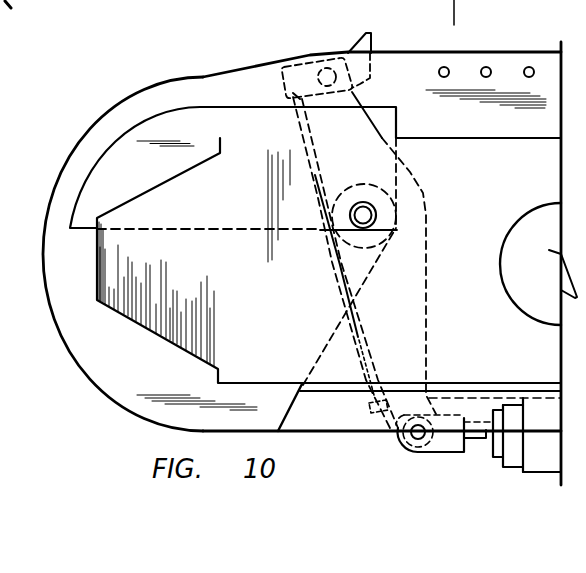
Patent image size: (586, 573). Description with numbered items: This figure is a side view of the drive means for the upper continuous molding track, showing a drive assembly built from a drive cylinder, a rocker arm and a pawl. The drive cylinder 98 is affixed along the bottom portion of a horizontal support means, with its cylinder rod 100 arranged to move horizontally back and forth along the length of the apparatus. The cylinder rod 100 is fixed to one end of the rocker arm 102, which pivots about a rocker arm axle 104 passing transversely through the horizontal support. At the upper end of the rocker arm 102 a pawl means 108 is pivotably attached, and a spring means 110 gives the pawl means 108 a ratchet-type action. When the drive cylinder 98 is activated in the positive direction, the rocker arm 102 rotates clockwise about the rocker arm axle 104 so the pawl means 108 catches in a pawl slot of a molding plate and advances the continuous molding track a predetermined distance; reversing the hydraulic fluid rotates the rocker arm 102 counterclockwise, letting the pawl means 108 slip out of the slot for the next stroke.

The drive cylinder 98 is at (538, 461).
The cylinder rod 100 is at (480, 439).
The rocker arm 102 is at (426, 312).
The rocker arm axle 104 is at (364, 214).
The pawl means 108 is at (371, 34).
The spring means 110 is at (352, 343).